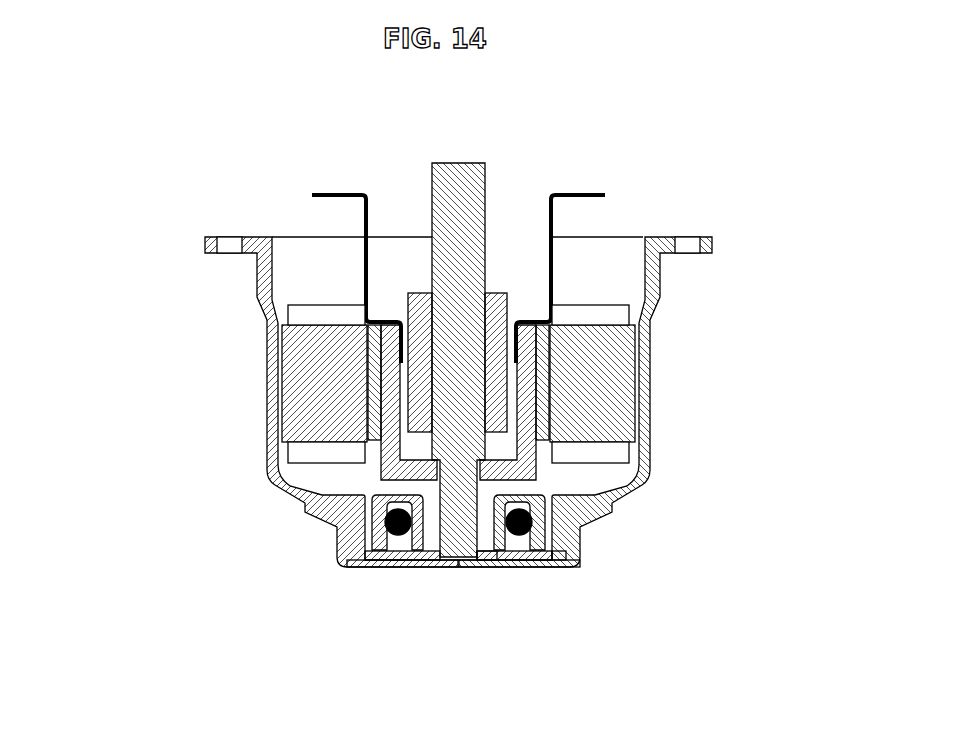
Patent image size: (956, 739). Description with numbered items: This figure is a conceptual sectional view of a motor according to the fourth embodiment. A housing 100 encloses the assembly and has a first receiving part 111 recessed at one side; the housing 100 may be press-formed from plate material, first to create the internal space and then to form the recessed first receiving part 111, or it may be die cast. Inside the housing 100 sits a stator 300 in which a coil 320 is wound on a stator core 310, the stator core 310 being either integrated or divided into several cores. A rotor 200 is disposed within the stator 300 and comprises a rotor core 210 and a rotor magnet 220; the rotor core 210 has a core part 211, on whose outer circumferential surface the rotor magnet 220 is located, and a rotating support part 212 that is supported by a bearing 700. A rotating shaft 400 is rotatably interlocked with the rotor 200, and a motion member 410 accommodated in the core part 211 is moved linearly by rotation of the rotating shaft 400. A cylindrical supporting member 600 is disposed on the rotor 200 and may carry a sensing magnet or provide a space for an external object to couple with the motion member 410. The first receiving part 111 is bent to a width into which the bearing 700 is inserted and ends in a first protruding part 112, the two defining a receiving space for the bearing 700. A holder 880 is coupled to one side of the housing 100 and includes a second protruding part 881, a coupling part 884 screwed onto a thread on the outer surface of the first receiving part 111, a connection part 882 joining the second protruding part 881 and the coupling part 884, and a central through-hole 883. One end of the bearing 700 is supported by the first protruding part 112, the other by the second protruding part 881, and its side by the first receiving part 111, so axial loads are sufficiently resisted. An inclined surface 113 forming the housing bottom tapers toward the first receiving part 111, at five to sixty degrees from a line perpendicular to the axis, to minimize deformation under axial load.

The housing 100 is at (656, 270).
The first receiving part 111 is at (577, 433).
The first protruding part 112 is at (557, 403).
The inclined surface 113 is at (587, 490).
The rotor 200 is at (254, 437).
The rotor core 210 is at (288, 437).
The core part 211 is at (390, 396).
The rotating support part 212 is at (413, 492).
The rotor magnet 220 is at (375, 376).
The stator 300 is at (538, 384).
The stator core 310 is at (628, 360).
The coil 320 is at (628, 312).
The rotating shaft 400 is at (462, 163).
The motion member 410 is at (497, 293).
The supporting member 600 is at (600, 194).
The bearing 700 is at (378, 537).
The holder 880 is at (501, 596).
The second protruding part 881 is at (532, 553).
The connection part 882 is at (565, 560).
The through-hole 883 is at (487, 557).
The coupling part 884 is at (609, 564).